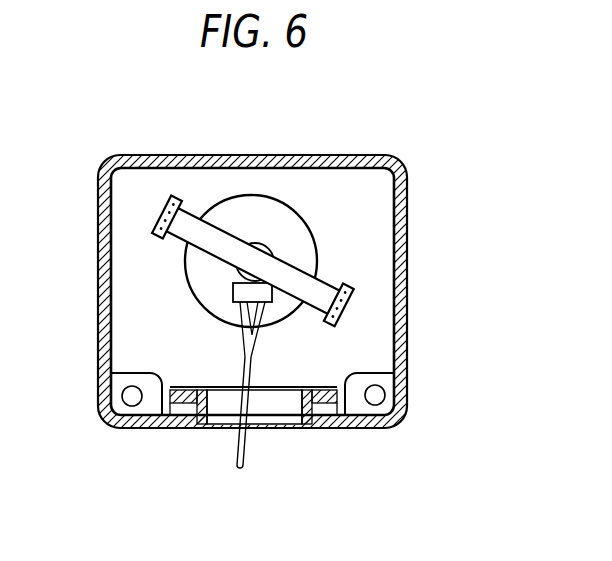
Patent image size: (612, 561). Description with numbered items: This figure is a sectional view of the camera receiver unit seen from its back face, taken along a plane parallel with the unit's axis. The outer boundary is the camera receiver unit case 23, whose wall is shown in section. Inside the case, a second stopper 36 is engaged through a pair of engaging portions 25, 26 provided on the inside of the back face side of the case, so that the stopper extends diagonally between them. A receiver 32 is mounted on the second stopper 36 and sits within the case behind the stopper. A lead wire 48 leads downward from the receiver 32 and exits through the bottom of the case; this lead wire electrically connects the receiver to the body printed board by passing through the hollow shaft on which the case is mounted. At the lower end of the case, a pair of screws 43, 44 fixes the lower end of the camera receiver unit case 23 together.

The camera receiver unit case 23 is at (268, 155).
The engaging portion 25 is at (153, 216).
The engaging portion 26 is at (353, 309).
The receiver 32 is at (316, 247).
The second stopper 36 is at (186, 240).
The screw 43 is at (377, 405).
The screw 44 is at (133, 406).
The lead wire 48 is at (244, 450).